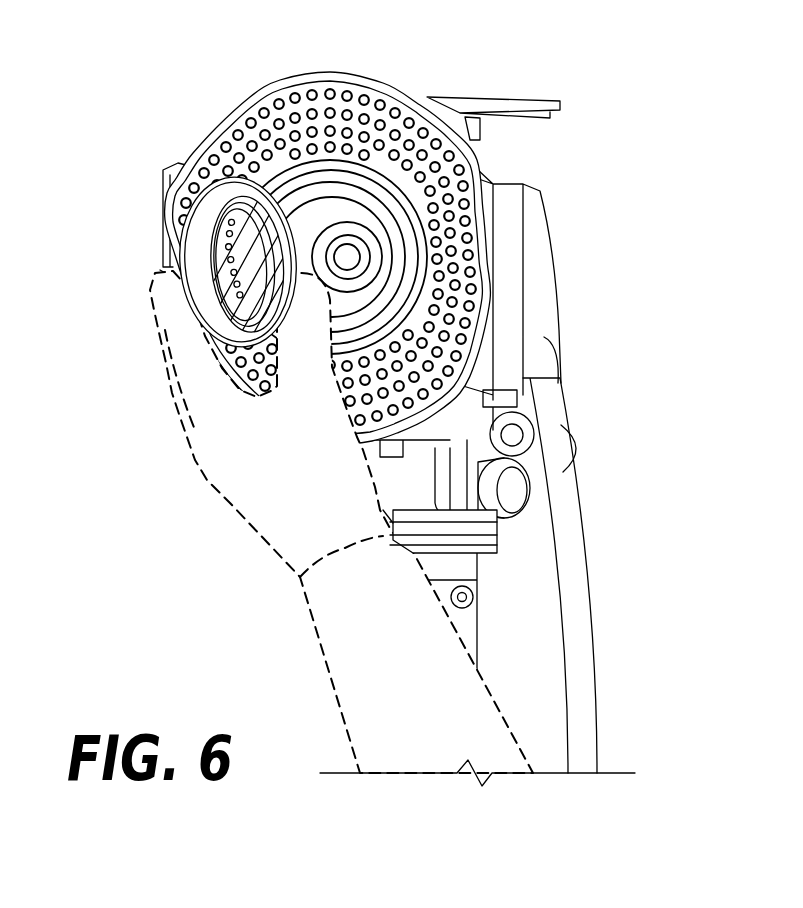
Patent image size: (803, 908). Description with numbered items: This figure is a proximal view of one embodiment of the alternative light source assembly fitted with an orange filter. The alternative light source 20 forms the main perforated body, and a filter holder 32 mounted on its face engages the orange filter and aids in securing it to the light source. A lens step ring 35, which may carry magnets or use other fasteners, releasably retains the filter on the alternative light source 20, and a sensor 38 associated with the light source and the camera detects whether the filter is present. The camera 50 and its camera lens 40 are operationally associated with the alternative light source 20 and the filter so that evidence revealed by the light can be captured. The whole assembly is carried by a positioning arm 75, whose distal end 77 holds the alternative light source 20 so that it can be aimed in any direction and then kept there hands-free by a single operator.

The alternative light source (ALS) 20 is at (443, 237).
The filter holder 32 is at (247, 190).
The lens step ring 35 is at (378, 313).
The sensor 38 is at (350, 340).
The camera lens 40 is at (352, 262).
The camera 50 is at (517, 213).
The positioning arm 75 is at (457, 640).
The distal end 77 is at (480, 467).